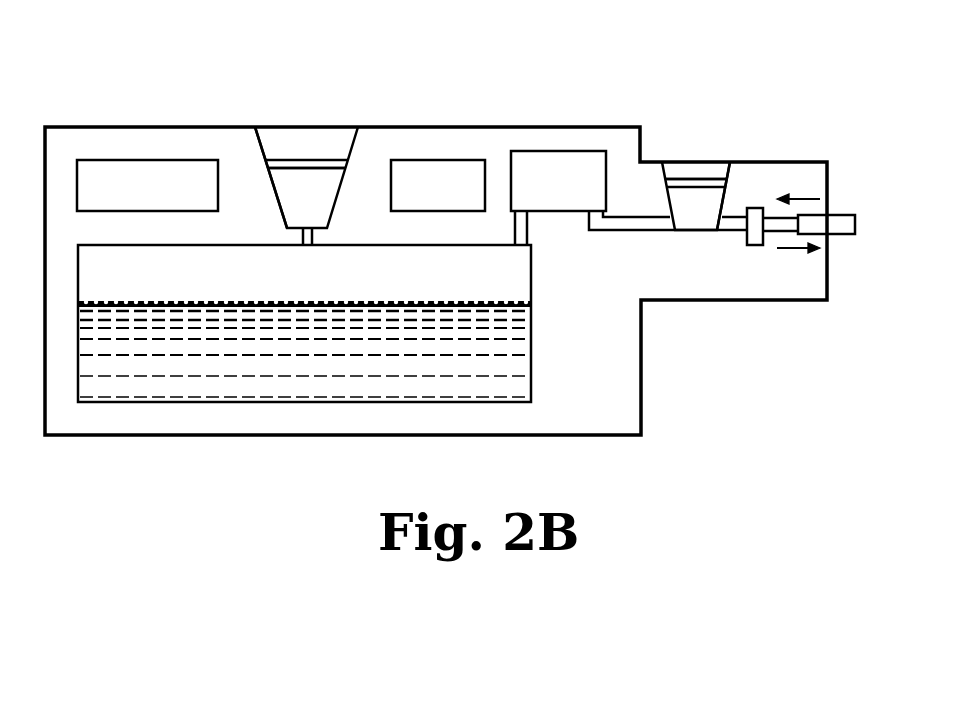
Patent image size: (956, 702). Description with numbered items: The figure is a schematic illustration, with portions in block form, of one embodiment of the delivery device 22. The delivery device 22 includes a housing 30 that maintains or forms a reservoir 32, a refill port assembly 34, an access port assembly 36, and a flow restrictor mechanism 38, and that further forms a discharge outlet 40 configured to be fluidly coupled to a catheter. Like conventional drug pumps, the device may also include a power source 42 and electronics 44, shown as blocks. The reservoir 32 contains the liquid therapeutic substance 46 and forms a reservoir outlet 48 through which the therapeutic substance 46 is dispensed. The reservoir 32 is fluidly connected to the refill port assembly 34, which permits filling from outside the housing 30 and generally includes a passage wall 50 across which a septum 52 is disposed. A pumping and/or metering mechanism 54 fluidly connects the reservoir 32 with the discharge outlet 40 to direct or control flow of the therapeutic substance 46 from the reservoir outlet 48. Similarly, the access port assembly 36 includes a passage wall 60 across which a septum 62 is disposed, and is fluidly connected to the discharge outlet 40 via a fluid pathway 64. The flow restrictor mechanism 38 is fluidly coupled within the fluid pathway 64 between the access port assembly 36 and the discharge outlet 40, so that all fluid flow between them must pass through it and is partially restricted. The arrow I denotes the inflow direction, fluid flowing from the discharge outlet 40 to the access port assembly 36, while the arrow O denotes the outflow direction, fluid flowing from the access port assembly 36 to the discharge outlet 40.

The delivery device 22 is at (468, 26).
The housing 30 is at (295, 436).
The reservoir 32 is at (443, 403).
The refill port assembly 34 is at (318, 150).
The access port assembly 36 is at (703, 170).
The flow restrictor mechanism 38 is at (753, 245).
The discharge outlet 40 is at (833, 215).
The power source 42 is at (133, 212).
The electronics 44 is at (441, 158).
The liquid therapeutic substance 46 is at (202, 367).
The reservoir outlet 48 is at (522, 250).
The passage wall 50 is at (275, 193).
The septum 52 is at (293, 170).
The metering mechanism 54 is at (548, 162).
The passage wall 60 is at (722, 207).
The septum 62 is at (675, 178).
The fluid pathway 64 is at (725, 233).
The inflow direction I is at (805, 197).
The outflow direction O is at (787, 248).